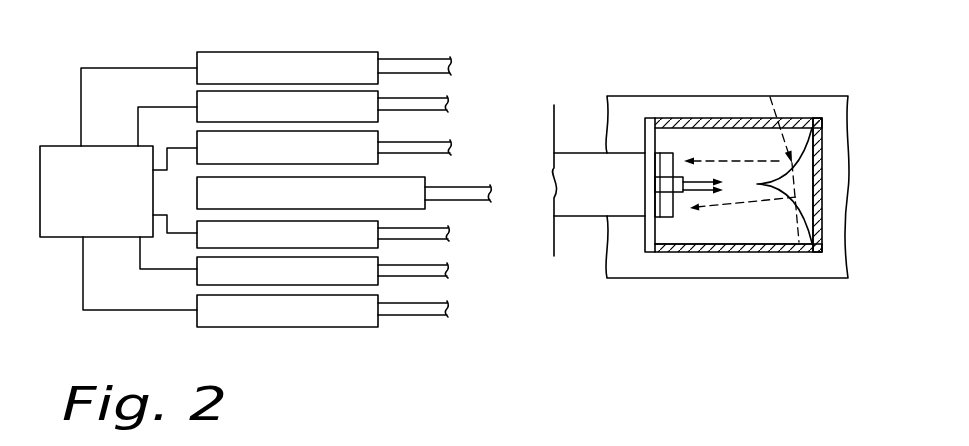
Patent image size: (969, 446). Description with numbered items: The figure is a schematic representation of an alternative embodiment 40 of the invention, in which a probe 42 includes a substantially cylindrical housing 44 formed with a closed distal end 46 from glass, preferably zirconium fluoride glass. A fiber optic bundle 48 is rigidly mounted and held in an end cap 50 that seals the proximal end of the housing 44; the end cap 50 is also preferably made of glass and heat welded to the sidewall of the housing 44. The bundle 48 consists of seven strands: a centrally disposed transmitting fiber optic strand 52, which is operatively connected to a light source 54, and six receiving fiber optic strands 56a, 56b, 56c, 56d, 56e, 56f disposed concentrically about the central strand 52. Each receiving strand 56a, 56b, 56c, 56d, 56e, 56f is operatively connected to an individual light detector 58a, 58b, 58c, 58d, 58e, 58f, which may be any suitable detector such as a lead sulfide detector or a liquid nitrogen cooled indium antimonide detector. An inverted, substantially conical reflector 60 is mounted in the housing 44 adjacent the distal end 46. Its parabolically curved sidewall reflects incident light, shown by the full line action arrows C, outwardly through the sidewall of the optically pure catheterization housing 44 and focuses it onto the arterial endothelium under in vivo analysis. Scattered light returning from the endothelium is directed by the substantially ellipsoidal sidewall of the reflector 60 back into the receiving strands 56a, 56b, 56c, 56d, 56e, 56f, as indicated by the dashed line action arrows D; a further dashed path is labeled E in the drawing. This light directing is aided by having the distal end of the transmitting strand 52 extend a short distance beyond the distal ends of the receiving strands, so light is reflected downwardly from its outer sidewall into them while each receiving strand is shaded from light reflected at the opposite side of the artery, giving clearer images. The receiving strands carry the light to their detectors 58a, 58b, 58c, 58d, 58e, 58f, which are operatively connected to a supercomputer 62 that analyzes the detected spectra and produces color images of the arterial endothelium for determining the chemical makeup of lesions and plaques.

The alternative embodiment 40 is at (540, 70).
The probe 42 is at (782, 113).
The housing 44 is at (743, 253).
The distal end 46 is at (817, 146).
The fiber optic bundle 48 is at (586, 163).
The end cap 50 is at (648, 233).
The transmitting fiber optic strand 52 is at (465, 180).
The light source 54 is at (413, 205).
The receiving fiber optic strand 56a is at (430, 58).
The receiving fiber optic strand 56b is at (427, 98).
The receiving fiber optic strand 56c is at (430, 140).
The receiving fiber optic strand 56d is at (428, 227).
The receiving fiber optic strand 56e is at (425, 263).
The receiving fiber optic strand 56f is at (430, 302).
The light detector 58a is at (287, 68).
The light detector 58b is at (287, 106).
The light detector 58c is at (287, 147).
The light detector 58d is at (287, 234).
The light detector 58e is at (287, 271).
The light detector 58f is at (287, 311).
The conical reflector 60 is at (825, 253).
The supercomputer 62 is at (136, 231).
The full line action arrows C is at (698, 187).
The dashed line action arrows D is at (719, 160).
The incident light path E is at (746, 95).